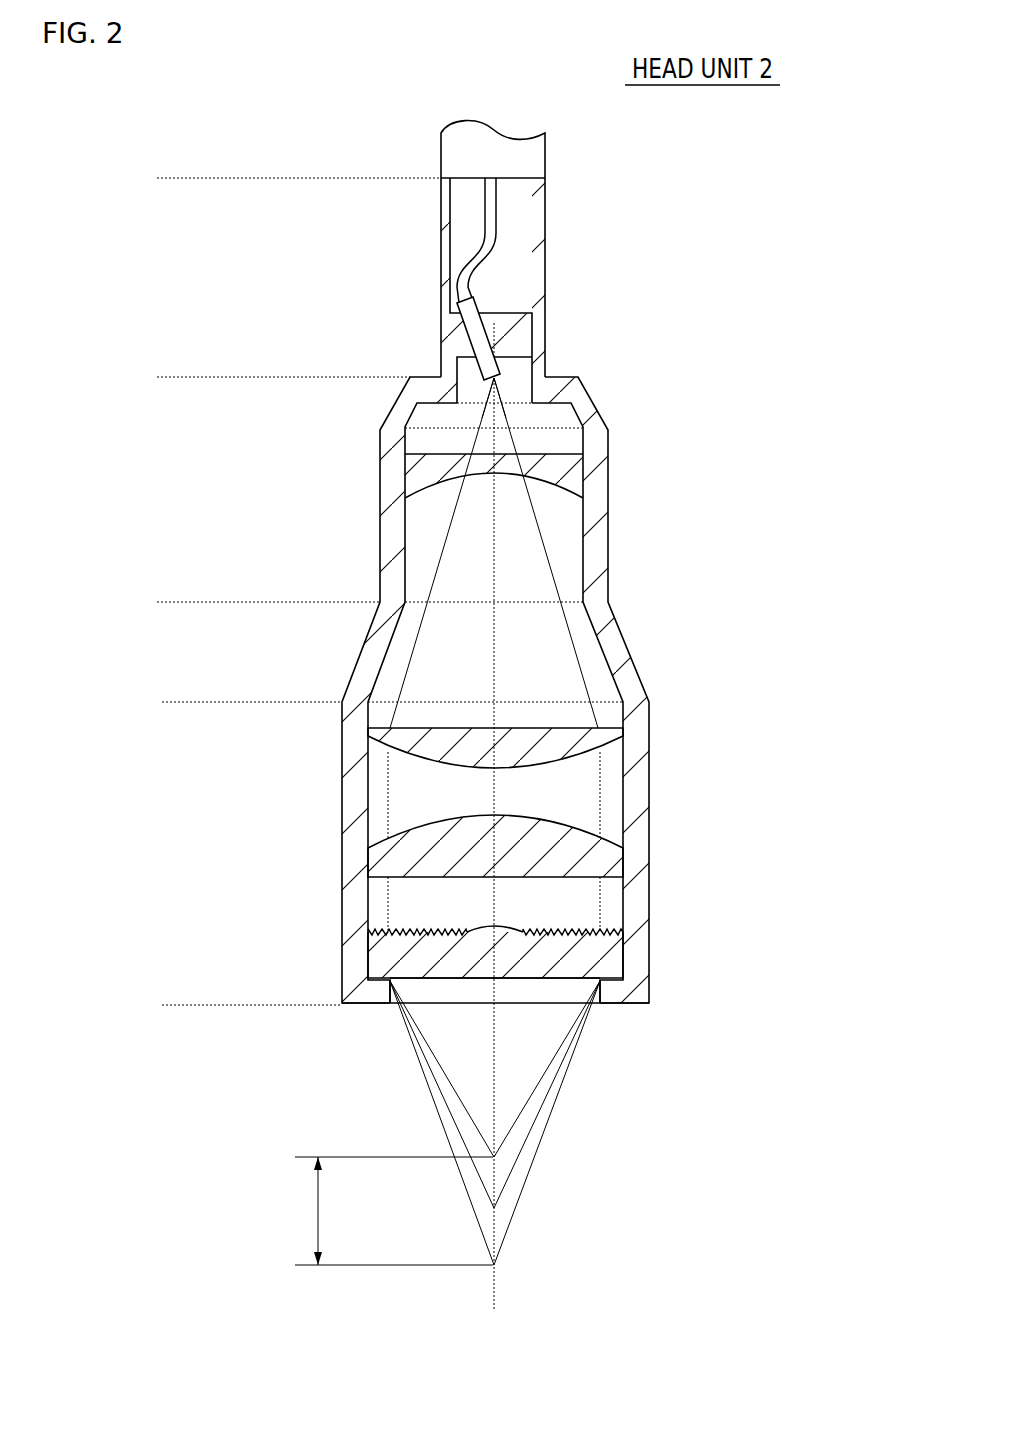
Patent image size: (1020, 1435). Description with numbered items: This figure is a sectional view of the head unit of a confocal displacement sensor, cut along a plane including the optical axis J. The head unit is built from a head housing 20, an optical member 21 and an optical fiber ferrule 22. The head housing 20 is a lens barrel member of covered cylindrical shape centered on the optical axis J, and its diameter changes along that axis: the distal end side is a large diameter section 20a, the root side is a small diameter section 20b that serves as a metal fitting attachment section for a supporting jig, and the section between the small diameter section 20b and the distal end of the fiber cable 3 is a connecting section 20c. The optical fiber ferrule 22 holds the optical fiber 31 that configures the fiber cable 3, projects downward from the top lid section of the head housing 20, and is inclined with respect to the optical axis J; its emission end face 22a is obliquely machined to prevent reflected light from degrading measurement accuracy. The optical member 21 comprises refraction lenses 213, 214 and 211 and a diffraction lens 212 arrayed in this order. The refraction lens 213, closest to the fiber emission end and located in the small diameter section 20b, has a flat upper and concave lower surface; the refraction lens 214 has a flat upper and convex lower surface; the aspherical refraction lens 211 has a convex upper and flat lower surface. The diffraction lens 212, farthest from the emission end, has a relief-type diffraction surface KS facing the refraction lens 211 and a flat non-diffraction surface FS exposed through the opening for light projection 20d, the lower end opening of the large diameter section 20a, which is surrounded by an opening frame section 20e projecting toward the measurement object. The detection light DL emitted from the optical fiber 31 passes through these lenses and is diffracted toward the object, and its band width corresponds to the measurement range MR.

The fiber cable 3 is at (545, 152).
The optical fiber 31 is at (488, 215).
The optical fiber ferrule 22 is at (456, 325).
The emission end face 22a is at (494, 378).
The head housing 20 is at (608, 440).
The large diameter section 20a is at (158, 702).
The small diameter section 20b is at (158, 378).
The connecting section 20c is at (158, 178).
The opening for light projection 20d is at (598, 990).
The opening frame section 20e is at (663, 977).
The optical member 21 is at (772, 470).
The refraction lens 211 is at (590, 845).
The diffraction lens 212 is at (588, 960).
The refraction lens 213 is at (575, 483).
The refraction lens 214 is at (565, 738).
The diffraction surface KS is at (590, 925).
The non-diffraction surface FS is at (520, 985).
The optical axis J is at (490, 665).
The detection light DL is at (553, 1125).
The measurement range MR is at (318, 1218).